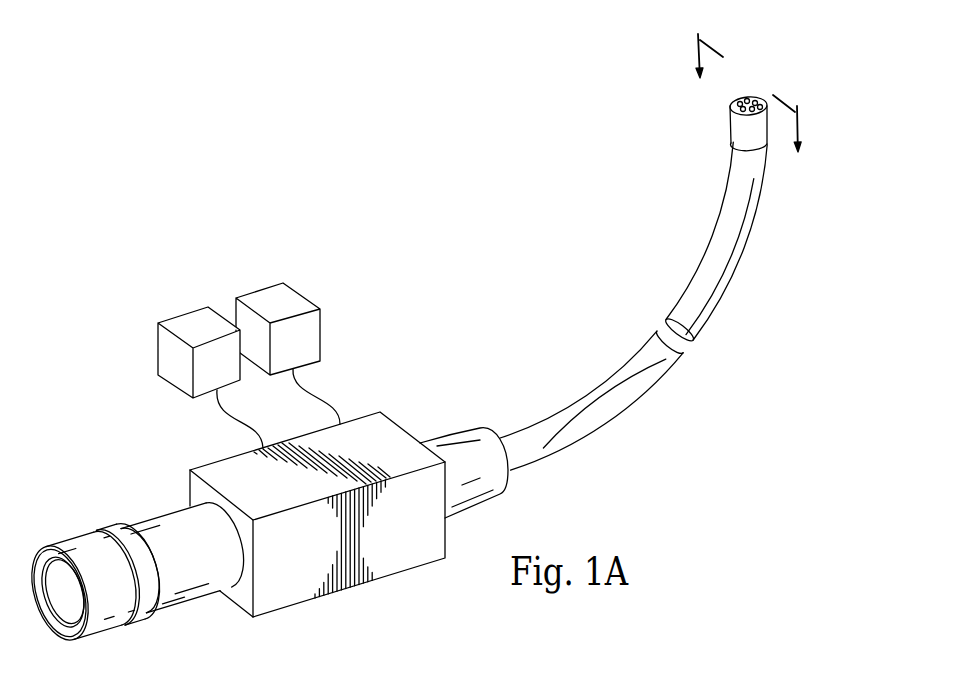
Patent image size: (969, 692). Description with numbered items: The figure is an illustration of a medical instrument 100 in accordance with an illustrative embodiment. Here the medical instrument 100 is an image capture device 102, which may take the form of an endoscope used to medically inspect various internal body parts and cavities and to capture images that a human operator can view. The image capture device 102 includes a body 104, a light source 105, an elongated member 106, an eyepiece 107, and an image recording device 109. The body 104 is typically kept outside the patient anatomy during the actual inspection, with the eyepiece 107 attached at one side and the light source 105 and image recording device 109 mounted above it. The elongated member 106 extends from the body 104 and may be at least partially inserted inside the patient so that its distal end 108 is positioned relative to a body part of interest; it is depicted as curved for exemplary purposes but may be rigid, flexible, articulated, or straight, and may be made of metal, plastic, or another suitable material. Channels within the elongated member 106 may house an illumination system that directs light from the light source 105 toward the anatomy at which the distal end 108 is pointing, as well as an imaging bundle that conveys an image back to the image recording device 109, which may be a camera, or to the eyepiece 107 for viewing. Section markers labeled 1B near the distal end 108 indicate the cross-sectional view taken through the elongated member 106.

The medical instrument 100 is at (296, 184).
The image capture device 102 is at (217, 283).
The body 104 is at (163, 453).
The light source 105 is at (320, 333).
The elongated member 106 is at (657, 402).
The eyepiece 107 is at (105, 496).
The distal end 108 is at (760, 72).
The image recording device 109 is at (158, 347).
The section line 1B is at (749, 108).